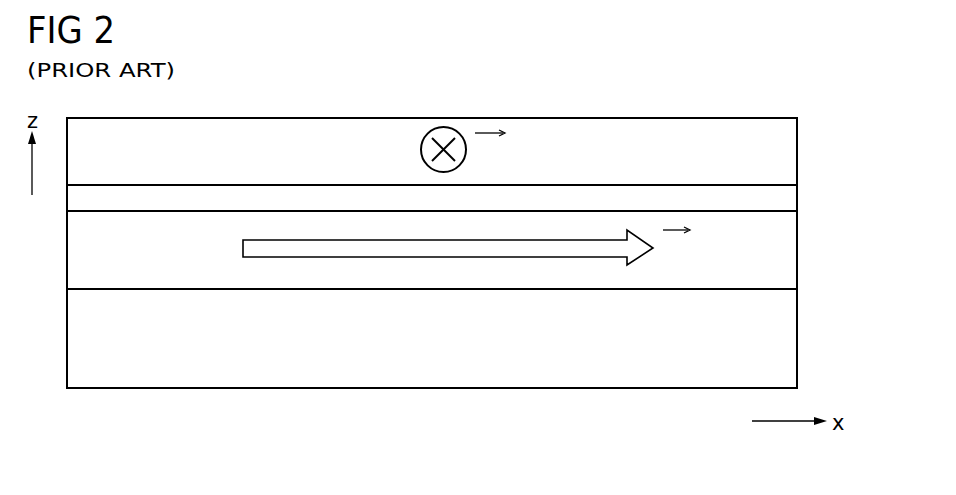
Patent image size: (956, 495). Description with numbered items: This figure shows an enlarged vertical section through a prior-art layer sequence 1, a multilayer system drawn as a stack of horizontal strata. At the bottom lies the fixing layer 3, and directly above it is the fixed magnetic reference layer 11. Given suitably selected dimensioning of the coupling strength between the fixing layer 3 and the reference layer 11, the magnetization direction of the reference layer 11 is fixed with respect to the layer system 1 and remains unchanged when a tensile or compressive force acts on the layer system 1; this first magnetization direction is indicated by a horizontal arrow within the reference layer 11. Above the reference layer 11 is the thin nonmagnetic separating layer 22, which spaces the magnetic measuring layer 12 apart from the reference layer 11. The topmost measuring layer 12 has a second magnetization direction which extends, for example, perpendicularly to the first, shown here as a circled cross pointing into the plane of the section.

The layer sequence 1 is at (689, 104).
The magnetic measuring layer 12 is at (787, 148).
The nonmagnetic separating layer 22 is at (787, 199).
The fixed magnetic reference layer 11 is at (787, 262).
The fixing layer 3 is at (787, 335).